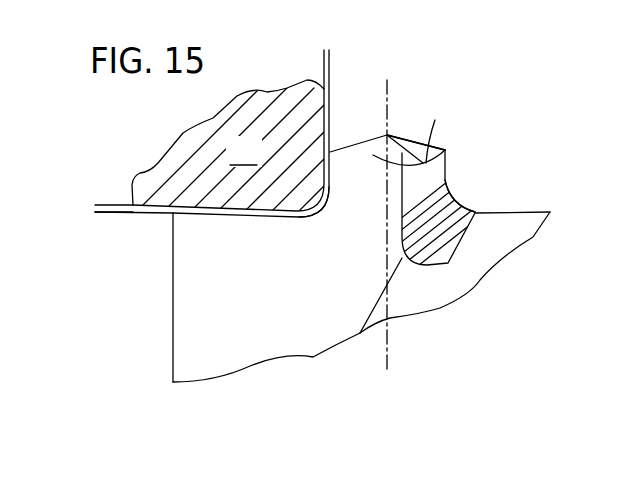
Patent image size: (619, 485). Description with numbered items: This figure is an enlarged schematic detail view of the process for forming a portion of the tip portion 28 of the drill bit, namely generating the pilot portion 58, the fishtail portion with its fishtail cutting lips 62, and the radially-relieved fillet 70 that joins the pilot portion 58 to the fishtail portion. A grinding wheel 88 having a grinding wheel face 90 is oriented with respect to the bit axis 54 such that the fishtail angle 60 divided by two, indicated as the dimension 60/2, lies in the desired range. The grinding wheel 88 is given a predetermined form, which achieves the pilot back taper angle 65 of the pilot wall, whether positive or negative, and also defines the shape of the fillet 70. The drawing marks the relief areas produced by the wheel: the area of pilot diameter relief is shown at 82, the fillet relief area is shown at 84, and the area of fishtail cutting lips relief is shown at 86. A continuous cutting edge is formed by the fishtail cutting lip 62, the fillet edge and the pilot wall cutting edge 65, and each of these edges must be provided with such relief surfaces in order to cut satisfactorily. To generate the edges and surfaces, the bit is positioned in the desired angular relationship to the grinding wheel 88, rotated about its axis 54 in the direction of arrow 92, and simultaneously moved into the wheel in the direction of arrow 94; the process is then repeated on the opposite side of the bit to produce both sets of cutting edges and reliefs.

The tip portion 28 is at (442, 64).
The bit axis 54 is at (388, 96).
The arrow 92 is at (415, 109).
The area of pilot diameter relief 82 is at (440, 170).
The pilot portion 58 is at (444, 178).
The radially-relieved fillet 70 is at (317, 213).
The axial back taper / pilot wall cutting edge 65 is at (288, 62).
The grinding wheel face 90 is at (199, 205).
The grinding wheel 88 is at (257, 165).
The fishtail angle 60 is at (108, 248).
The half dimension 2 is at (108, 204).
The fishtail cutting lips 62 is at (210, 217).
The arrow 94 is at (143, 270).
The fillet relief area 84 is at (430, 237).
The area of fishtail cutting lips relief 86 is at (490, 247).